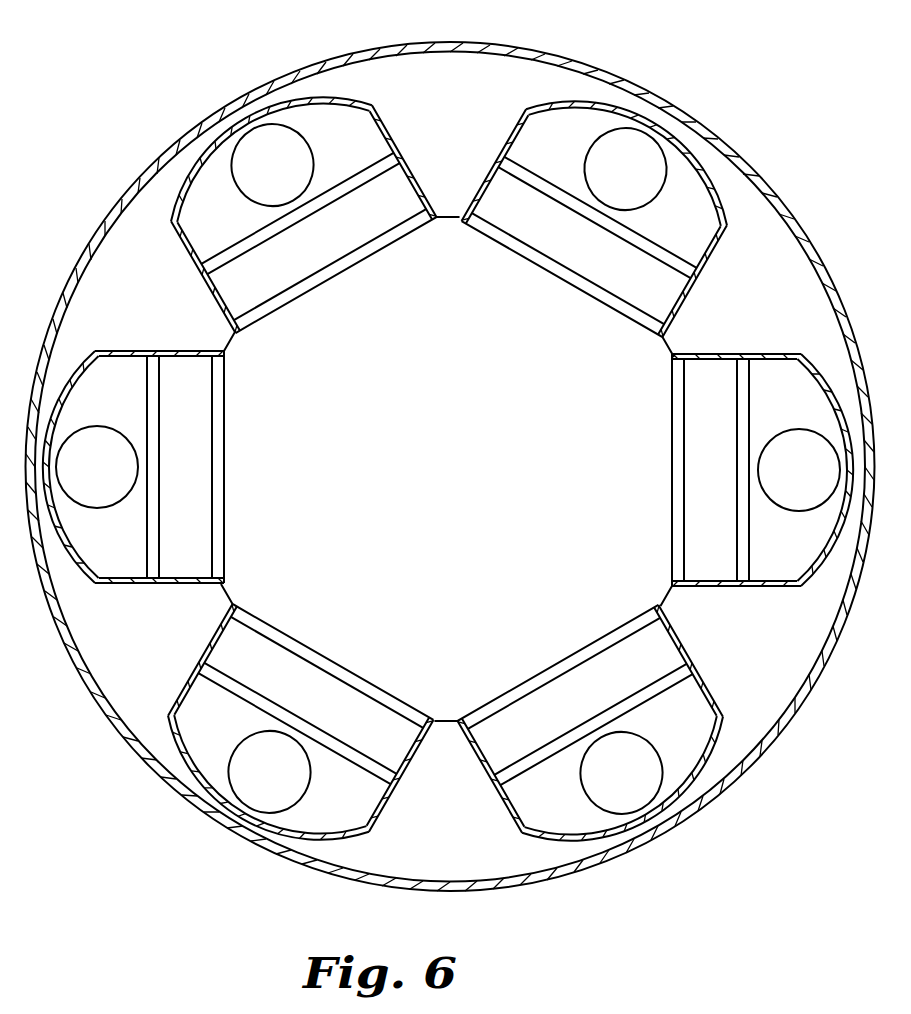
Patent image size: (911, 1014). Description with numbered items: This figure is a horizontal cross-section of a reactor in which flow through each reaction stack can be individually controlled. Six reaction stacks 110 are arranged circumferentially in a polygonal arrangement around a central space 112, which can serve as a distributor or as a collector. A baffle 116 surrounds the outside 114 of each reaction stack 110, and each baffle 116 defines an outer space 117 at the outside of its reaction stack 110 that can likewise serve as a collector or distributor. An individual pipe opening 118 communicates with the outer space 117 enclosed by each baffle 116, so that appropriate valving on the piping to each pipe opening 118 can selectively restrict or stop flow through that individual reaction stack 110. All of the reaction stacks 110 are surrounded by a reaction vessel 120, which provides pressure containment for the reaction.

The reaction stack 110 is at (299, 256).
The central space 112 is at (452, 460).
The outside of reaction stack 114 is at (527, 158).
The baffle 116 is at (712, 167).
The outer space 117 is at (680, 222).
The pipe opening 118 is at (293, 780).
The reaction vessel 120 is at (770, 748).